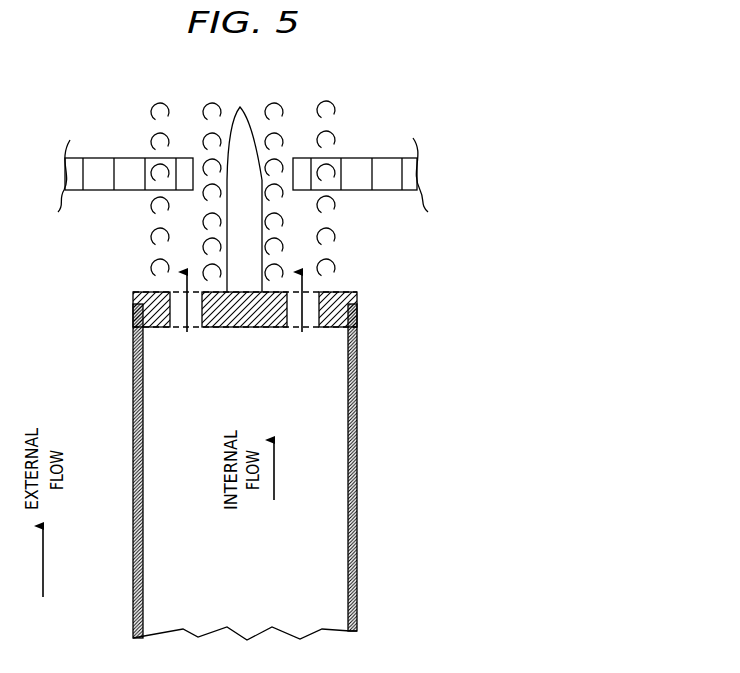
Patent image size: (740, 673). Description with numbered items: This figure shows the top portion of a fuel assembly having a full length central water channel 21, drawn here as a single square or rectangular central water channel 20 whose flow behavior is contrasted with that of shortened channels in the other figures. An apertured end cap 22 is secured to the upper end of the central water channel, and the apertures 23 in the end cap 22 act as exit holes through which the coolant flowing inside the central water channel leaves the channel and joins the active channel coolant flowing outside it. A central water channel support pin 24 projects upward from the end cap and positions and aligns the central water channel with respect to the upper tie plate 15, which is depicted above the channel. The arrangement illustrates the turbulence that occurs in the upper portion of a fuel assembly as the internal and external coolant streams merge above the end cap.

The upper tie plate 15 is at (378, 165).
The central water channel 20 is at (358, 475).
The full length central water channel 21 is at (133, 368).
The apertured end cap 22 is at (143, 293).
The apertures 23 is at (305, 314).
The central water channel support pin 24 is at (245, 120).